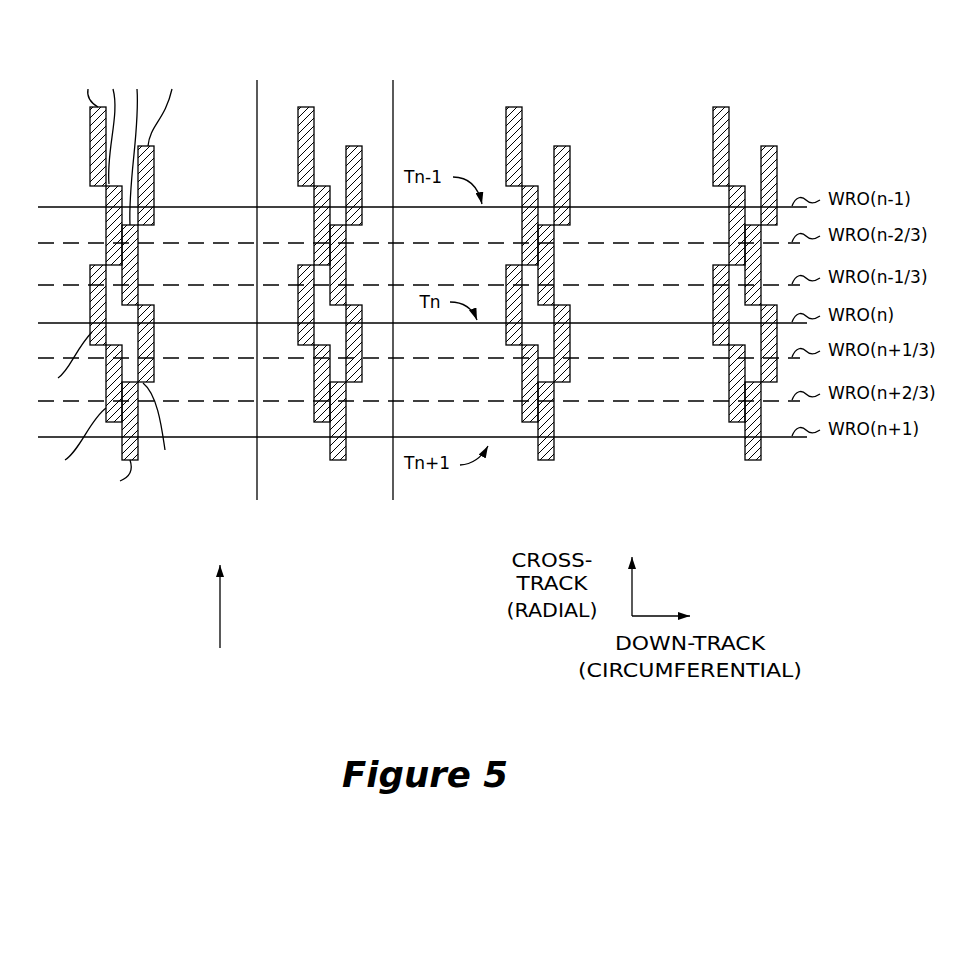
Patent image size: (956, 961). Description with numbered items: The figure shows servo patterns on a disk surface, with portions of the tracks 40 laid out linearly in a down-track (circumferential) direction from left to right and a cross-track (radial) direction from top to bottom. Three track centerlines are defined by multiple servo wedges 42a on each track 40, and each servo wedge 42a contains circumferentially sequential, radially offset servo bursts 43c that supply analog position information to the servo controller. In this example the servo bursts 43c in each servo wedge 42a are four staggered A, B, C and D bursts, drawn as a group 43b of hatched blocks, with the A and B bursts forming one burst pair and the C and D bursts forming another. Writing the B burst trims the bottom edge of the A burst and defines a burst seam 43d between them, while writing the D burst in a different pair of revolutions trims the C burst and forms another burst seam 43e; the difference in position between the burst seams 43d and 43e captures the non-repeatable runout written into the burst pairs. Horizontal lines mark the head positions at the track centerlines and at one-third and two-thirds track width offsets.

The track 40 is at (225, 623).
The servo wedge 42a is at (247, 512).
The first set of staggered write elements (A, B, C, D) 43b is at (70, 63).
The servo burst 43c is at (282, 97).
The burst seam 43d is at (102, 192).
The burst seam 43e is at (142, 234).